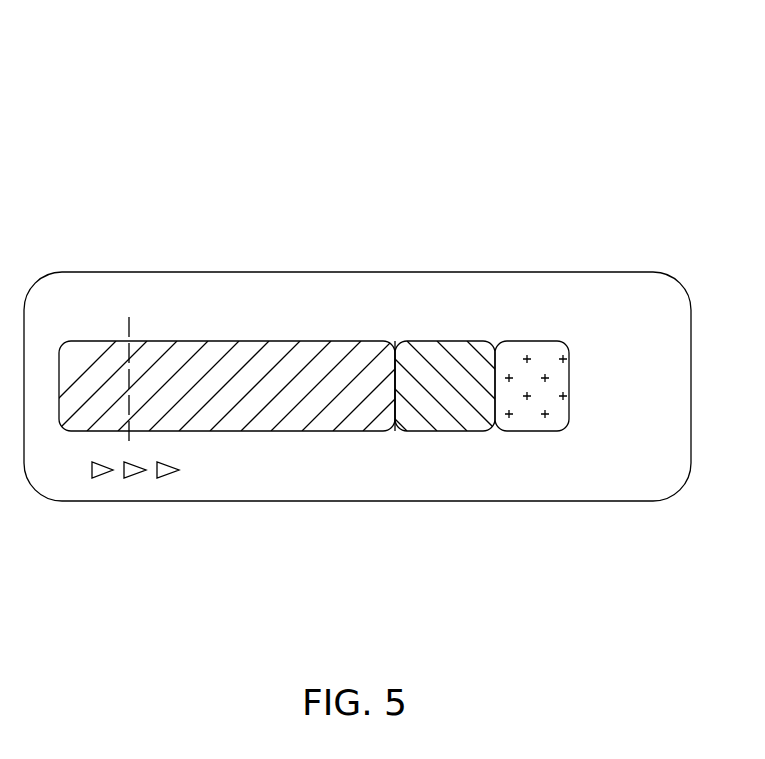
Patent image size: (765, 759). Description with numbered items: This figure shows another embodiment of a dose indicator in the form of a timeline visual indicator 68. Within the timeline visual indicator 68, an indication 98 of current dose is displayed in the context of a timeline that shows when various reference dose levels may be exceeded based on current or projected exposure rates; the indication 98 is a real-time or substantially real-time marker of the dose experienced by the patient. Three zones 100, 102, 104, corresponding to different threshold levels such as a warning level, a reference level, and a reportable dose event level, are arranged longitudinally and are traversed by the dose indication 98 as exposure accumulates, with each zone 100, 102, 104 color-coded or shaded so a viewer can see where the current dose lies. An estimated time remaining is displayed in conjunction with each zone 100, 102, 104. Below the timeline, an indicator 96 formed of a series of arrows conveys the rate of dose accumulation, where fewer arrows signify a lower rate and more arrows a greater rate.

The timeline visual indicator 68 is at (630, 118).
The indicator 96 is at (90, 485).
The indication of current dose 98 is at (135, 318).
The zone 100 is at (250, 341).
The zone 102 is at (433, 362).
The zone 104 is at (522, 432).